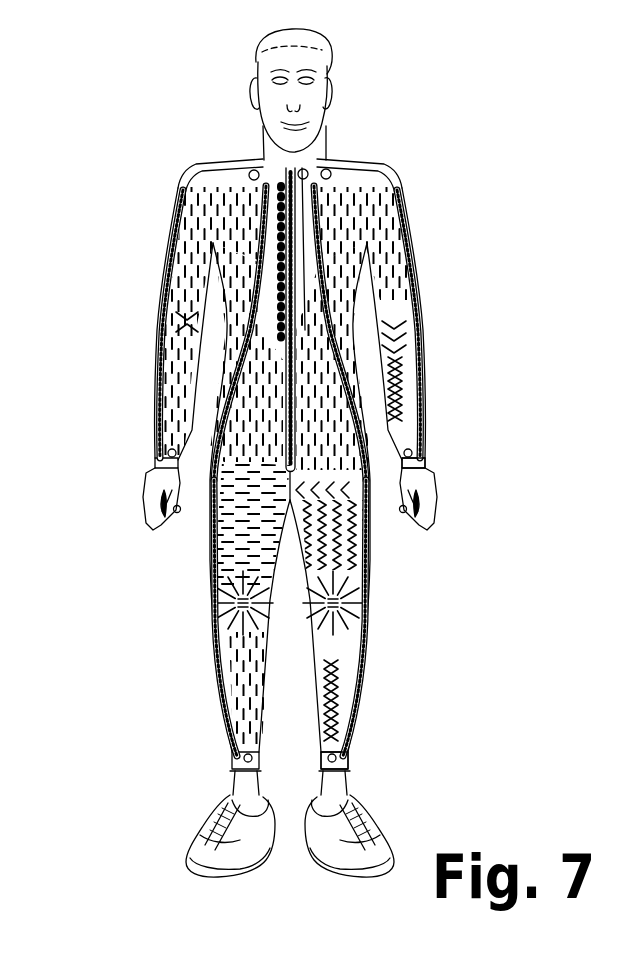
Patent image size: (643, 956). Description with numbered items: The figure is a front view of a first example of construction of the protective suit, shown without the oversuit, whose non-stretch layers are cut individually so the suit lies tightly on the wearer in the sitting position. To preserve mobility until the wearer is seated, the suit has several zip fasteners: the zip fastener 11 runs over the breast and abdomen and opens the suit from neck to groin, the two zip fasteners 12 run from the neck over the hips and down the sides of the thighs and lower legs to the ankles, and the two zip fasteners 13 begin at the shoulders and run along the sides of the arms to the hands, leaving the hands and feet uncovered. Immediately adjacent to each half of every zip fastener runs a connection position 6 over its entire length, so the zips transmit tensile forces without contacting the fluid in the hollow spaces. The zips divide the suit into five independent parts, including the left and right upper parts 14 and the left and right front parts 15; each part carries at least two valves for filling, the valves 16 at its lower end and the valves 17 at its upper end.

The connection position 6 is at (242, 222).
The zip fastener 11 is at (297, 412).
The zip fastener 12 is at (212, 582).
The zip fastener 13 is at (420, 265).
The upper part 14 is at (353, 218).
The front part 15 is at (257, 430).
The valve 16 is at (426, 459).
The valve 17 is at (331, 171).